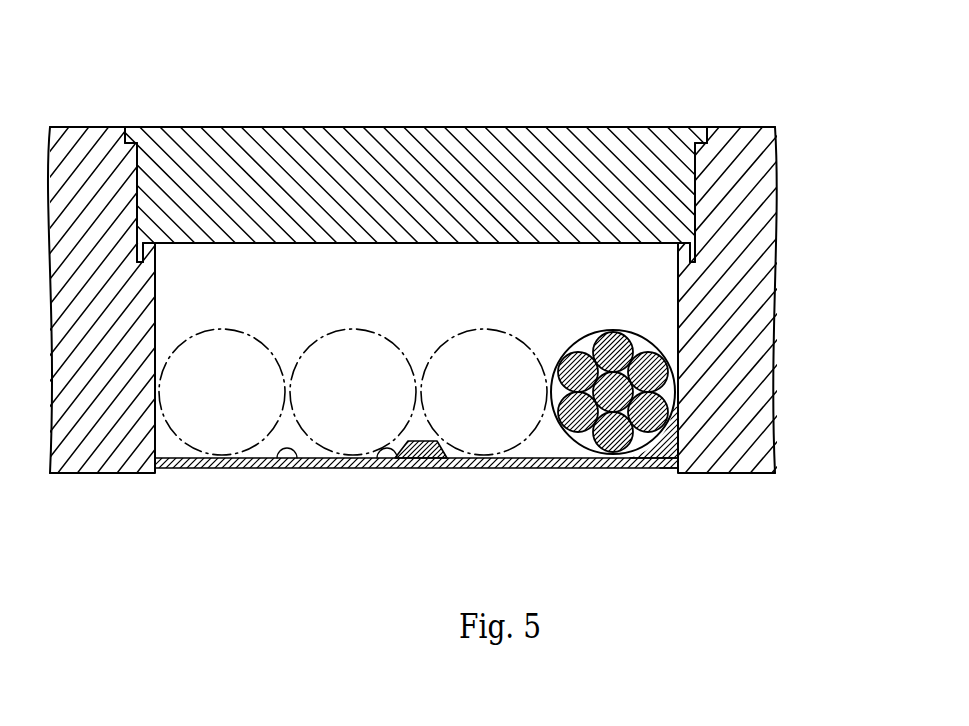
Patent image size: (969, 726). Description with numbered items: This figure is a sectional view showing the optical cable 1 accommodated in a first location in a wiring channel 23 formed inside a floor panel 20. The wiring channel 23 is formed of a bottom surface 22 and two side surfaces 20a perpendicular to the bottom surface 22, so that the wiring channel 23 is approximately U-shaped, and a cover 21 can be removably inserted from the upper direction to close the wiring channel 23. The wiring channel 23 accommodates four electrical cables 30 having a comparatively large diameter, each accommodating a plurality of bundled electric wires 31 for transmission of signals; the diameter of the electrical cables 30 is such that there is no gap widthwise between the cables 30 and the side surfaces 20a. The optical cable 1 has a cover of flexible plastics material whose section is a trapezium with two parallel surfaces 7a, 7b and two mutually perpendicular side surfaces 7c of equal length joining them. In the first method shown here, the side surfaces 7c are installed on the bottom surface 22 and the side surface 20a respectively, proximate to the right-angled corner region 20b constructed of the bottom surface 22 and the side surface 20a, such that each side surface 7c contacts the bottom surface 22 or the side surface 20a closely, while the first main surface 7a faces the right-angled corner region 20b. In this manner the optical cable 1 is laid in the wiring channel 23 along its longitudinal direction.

The optical cable 1 is at (375, 469).
The first main surface 7a is at (680, 460).
The second main surface 7b is at (418, 469).
The side surfaces 7c is at (680, 430).
The floor panel 20 is at (706, 115).
The side surfaces 20a is at (157, 268).
The right-angled corner region 20b is at (662, 468).
The cover 21 is at (508, 146).
The bottom surface 22 is at (277, 469).
The wiring channel 23 is at (335, 272).
The electrical cables 30 is at (248, 332).
The electric wires 31 is at (574, 370).